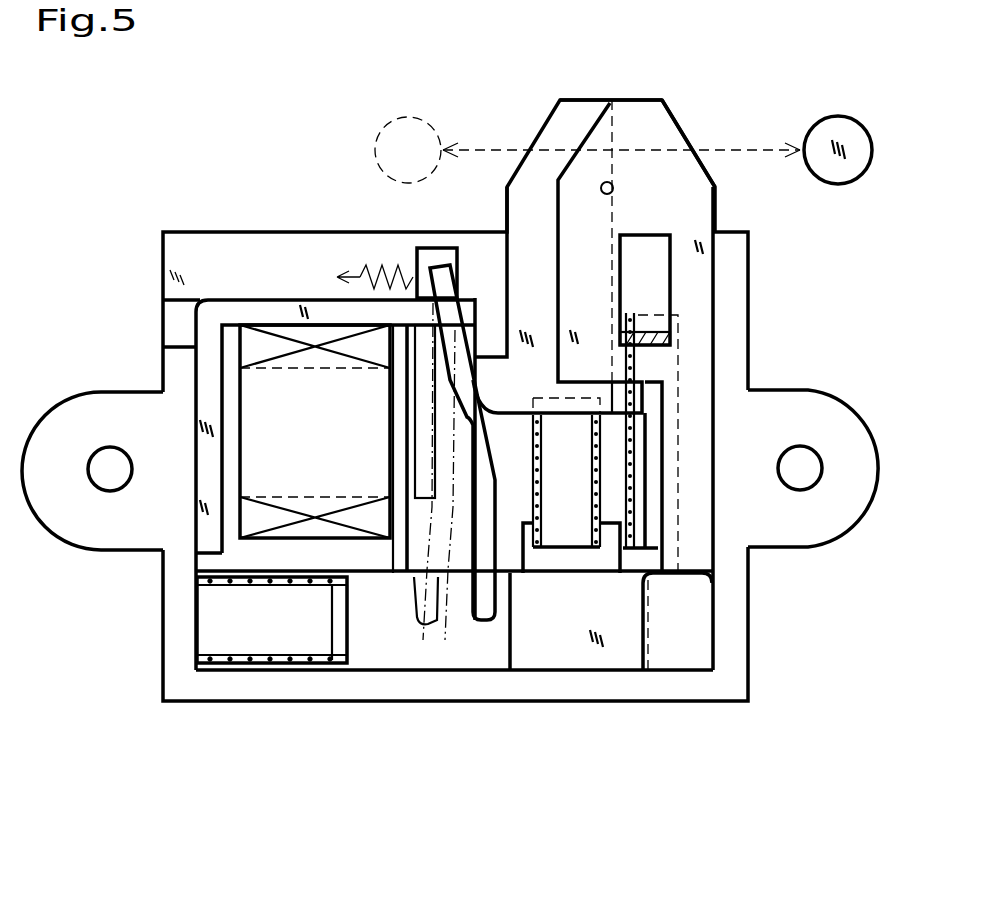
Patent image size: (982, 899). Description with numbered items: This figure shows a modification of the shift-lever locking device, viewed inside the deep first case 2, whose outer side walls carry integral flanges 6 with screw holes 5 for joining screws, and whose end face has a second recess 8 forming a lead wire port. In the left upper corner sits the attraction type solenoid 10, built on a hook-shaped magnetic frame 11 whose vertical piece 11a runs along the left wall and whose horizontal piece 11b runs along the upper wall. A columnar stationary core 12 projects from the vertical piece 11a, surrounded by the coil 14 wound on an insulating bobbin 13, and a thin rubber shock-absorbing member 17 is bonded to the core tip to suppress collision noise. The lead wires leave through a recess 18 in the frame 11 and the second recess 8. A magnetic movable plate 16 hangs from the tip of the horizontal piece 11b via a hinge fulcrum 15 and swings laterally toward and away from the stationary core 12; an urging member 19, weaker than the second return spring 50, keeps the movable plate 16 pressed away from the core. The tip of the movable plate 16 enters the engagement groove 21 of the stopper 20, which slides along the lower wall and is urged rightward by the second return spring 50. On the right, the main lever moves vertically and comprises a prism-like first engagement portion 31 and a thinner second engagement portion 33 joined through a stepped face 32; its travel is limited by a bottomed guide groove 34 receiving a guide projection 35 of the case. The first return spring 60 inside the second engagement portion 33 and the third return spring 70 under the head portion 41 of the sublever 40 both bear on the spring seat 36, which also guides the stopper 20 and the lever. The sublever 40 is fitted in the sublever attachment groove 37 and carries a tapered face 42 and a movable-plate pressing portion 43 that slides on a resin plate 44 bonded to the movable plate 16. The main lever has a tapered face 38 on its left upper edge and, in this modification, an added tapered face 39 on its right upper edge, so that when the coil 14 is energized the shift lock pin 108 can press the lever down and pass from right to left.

The first case 2 is at (208, 232).
The screw hole 5 is at (105, 490).
The flange 6 is at (48, 535).
The second recess 8 is at (172, 310).
The solenoid 10 is at (296, 559).
The frame 11 is at (173, 414).
The vertical piece 11a is at (205, 484).
The horizontal piece 11b is at (307, 298).
The stationary core 12 is at (273, 298).
The bobbin 13 is at (233, 518).
The coil 14 is at (317, 533).
The fulcrum 15 is at (458, 262).
The movable plate 16 is at (488, 622).
The shock-absorbing member 17 is at (440, 430).
The recess 18 is at (207, 368).
The urging member 19 is at (380, 262).
The stopper 20 is at (573, 652).
The engagement groove 21 is at (503, 643).
The first engagement portion 31 is at (705, 296).
The stepped face 32 is at (582, 387).
The second engagement portion 33 is at (705, 510).
The bottomed guide groove 34 is at (663, 262).
The guide projection 35 is at (668, 340).
The spring seat 36 is at (645, 562).
The sublever attachment groove 37 is at (614, 190).
The tapered face 38 is at (593, 130).
The tapered face 39 is at (677, 118).
The sublever 40 is at (565, 103).
The head portion 41 is at (568, 418).
The tapered face 42 is at (543, 130).
The movable-plate pressing portion 43 is at (492, 367).
The resin plate 44 is at (547, 490).
The second return spring 50 is at (238, 670).
The first return spring 60 is at (637, 452).
The third return spring 70 is at (600, 497).
The shift lock pin 108 is at (840, 117).